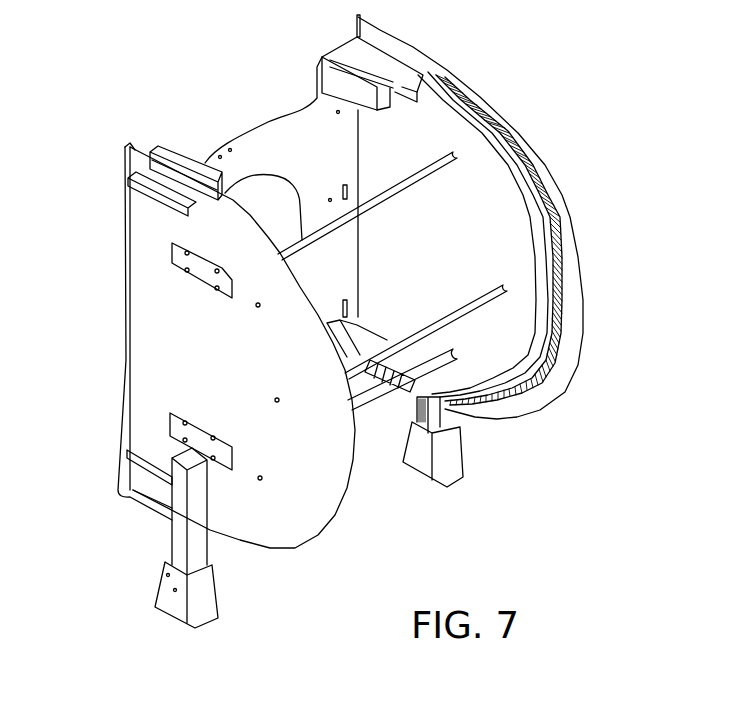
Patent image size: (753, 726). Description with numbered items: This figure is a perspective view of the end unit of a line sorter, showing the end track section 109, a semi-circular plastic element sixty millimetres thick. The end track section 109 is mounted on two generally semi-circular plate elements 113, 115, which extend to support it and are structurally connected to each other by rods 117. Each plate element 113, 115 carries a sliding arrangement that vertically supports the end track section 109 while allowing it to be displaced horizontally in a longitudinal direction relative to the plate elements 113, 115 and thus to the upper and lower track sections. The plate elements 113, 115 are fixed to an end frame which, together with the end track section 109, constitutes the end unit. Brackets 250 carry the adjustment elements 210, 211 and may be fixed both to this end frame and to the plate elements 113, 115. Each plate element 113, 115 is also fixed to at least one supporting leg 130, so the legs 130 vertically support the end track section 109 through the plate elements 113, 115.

The end track section 109 is at (498, 162).
The plate element 113 is at (572, 275).
The plate element 115 is at (157, 347).
The rods 117 is at (418, 177).
The supporting leg 130 is at (503, 482).
The adjustment element 210 is at (168, 168).
The adjustment element 211 is at (352, 45).
The brackets 250 is at (183, 157).